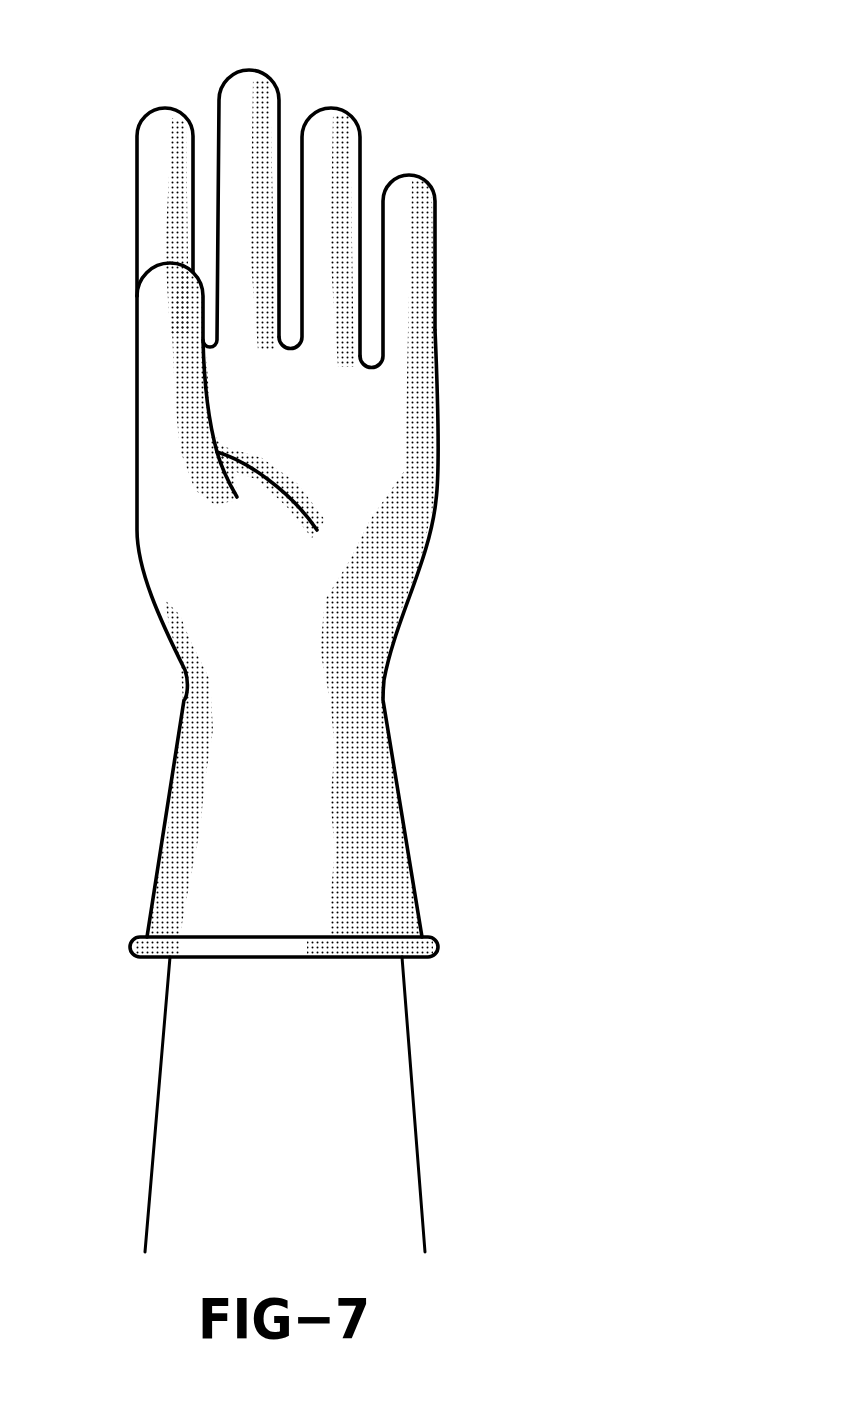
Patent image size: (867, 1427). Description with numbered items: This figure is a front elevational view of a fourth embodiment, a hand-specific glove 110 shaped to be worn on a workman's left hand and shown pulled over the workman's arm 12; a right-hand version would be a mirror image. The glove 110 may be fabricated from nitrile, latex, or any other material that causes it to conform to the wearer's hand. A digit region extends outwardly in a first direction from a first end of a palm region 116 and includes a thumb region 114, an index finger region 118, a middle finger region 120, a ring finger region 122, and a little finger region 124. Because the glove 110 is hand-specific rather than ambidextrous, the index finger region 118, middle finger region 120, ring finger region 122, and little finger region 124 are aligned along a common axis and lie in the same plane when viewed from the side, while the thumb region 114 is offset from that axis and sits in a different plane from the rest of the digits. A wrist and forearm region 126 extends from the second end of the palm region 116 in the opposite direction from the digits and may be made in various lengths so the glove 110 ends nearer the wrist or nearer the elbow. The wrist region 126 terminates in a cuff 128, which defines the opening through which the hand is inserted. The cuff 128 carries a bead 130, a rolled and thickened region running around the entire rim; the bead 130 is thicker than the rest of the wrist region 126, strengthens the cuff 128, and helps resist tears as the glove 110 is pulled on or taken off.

The glove 110 is at (472, 338).
The arm 12 is at (383, 1130).
The thumb region 114 is at (152, 323).
The palm region 116 is at (330, 455).
The index finger region 118 is at (153, 147).
The middle finger region 120 is at (247, 80).
The ring finger region 122 is at (327, 123).
The little finger region 124 is at (413, 220).
The wrist and forearm region 126 is at (236, 751).
The cuff 128 is at (213, 915).
The bead 130 is at (265, 957).